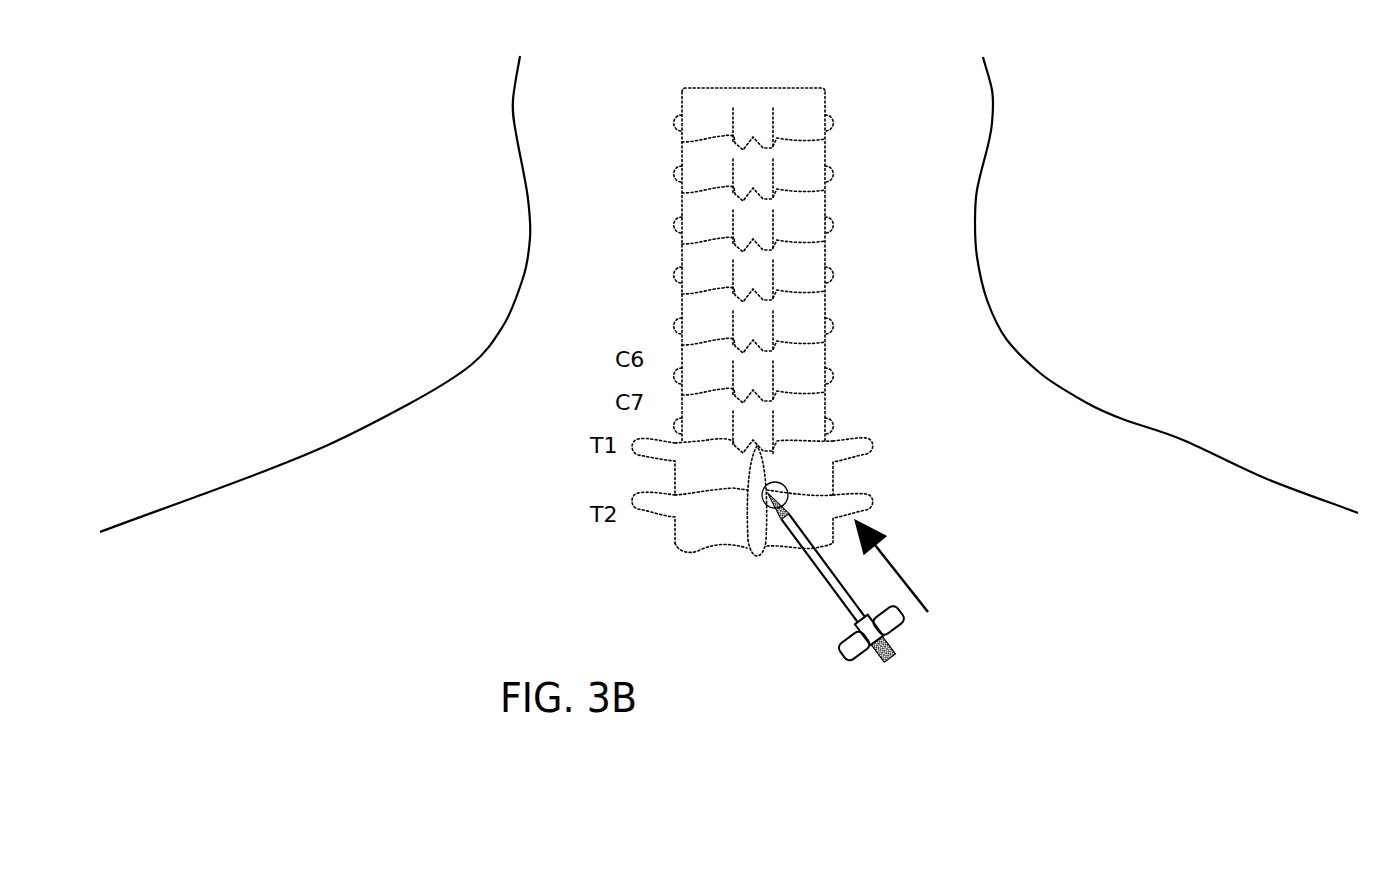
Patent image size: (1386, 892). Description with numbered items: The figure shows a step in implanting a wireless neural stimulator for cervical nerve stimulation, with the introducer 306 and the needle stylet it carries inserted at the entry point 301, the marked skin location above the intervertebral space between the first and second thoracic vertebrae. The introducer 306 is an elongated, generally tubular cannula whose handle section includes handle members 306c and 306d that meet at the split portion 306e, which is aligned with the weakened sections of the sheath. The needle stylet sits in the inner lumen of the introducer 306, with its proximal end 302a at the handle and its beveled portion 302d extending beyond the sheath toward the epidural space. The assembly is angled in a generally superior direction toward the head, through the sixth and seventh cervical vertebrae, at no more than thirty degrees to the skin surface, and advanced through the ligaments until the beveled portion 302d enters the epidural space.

The entry point 301 is at (785, 498).
The proximal end 302a is at (893, 655).
The beveled portion 302d is at (788, 488).
The introducer 306 is at (820, 575).
The handle member 306c is at (852, 660).
The handle member 306d is at (905, 623).
The split portion 306e is at (873, 642).